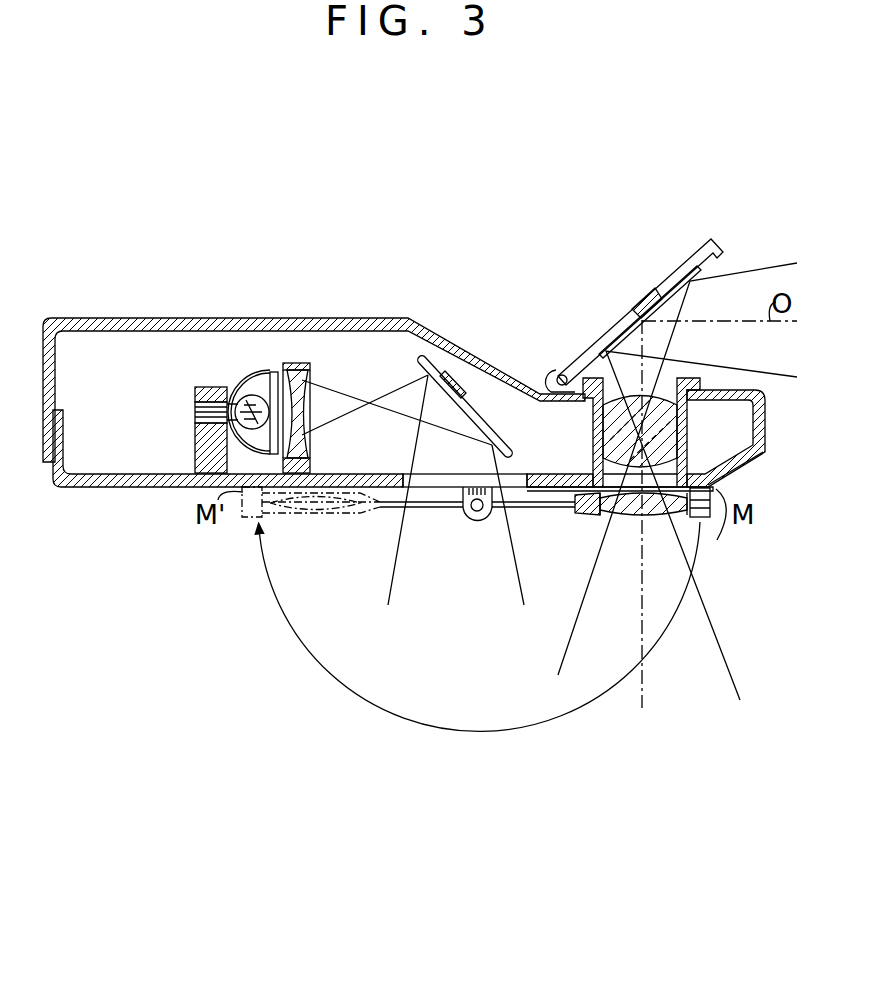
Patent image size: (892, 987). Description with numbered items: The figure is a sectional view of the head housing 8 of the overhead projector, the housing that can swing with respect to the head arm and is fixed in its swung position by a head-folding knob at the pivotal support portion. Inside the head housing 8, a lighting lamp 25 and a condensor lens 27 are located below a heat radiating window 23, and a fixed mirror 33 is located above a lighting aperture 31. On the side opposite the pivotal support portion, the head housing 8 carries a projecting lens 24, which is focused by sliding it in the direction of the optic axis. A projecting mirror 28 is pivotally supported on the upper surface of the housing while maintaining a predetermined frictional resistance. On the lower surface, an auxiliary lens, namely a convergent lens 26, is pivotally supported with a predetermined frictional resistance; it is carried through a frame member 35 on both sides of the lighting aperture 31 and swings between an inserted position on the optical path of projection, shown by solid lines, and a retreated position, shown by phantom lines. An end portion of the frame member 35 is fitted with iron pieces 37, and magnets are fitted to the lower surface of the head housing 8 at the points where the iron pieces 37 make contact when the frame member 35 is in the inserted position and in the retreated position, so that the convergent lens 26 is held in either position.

The head housing 8 is at (471, 346).
The heat radiating window 23 is at (228, 318).
The projecting lens 24 is at (668, 428).
The lighting lamp 25 is at (249, 398).
The convergent lens 26 is at (628, 519).
The condensor lens 27 is at (297, 367).
The projecting mirror 28 is at (656, 290).
The lighting aperture 31 is at (432, 482).
The fixed mirror 33 is at (476, 407).
The frame member 35 is at (547, 506).
The iron pieces 37 is at (705, 520).